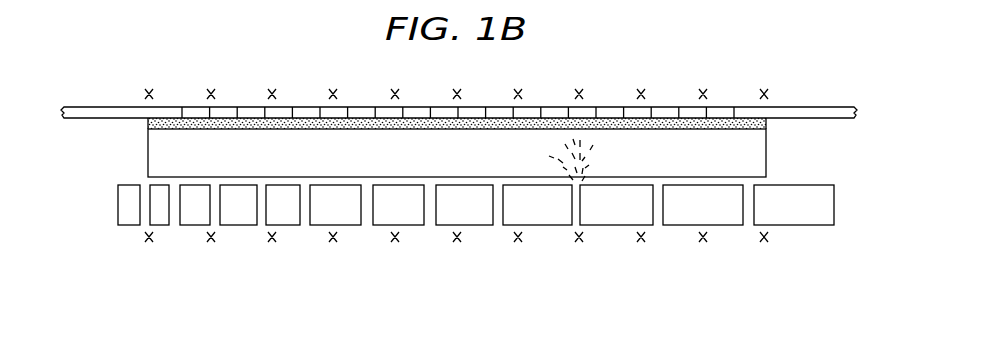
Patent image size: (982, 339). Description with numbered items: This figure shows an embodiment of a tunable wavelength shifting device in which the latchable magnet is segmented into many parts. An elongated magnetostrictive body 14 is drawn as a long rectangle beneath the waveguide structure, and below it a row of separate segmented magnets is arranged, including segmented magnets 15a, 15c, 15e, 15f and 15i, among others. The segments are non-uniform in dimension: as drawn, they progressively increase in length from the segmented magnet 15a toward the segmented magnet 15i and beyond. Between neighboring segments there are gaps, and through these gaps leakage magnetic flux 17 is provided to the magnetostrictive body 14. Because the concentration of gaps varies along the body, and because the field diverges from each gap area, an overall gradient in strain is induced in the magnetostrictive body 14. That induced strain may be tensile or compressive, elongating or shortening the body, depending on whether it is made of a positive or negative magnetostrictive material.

The magnetostrictive body 14 is at (162, 155).
The segmented magnet 15a is at (130, 215).
The segmented magnet 15c is at (192, 218).
The segmented magnet 15e is at (282, 215).
The segmented magnet 15f is at (348, 226).
The segmented magnet 15i is at (545, 215).
The leakage magnetic flux 17 is at (580, 185).